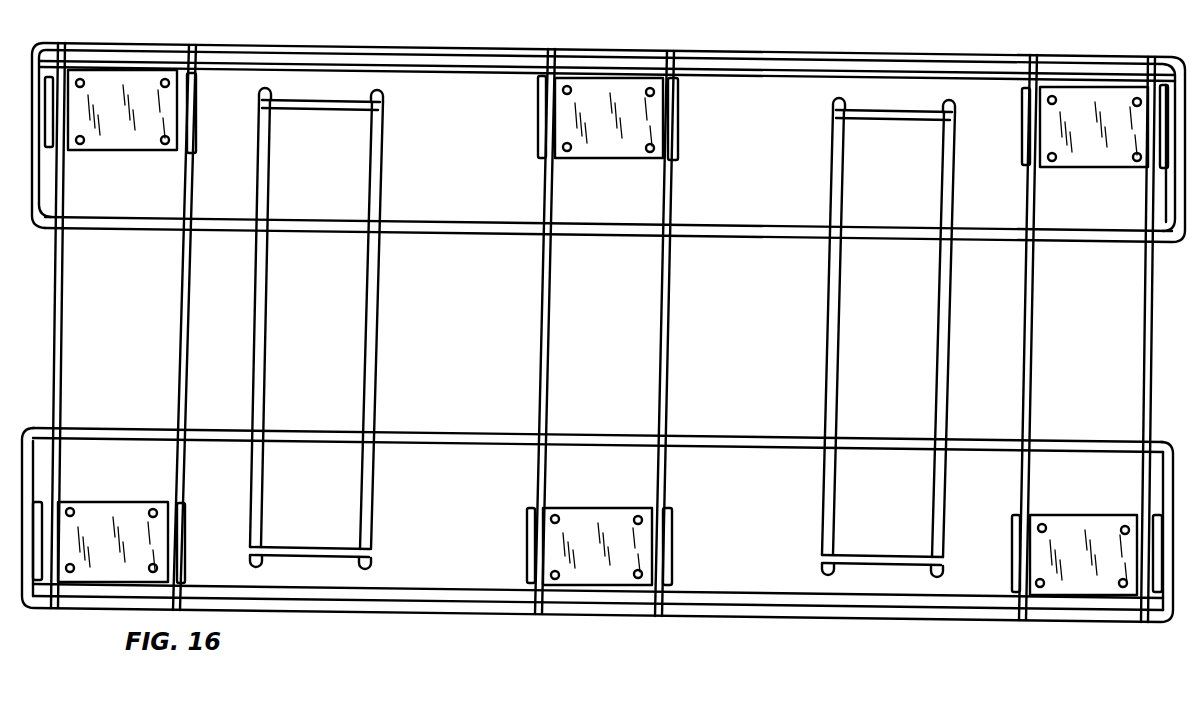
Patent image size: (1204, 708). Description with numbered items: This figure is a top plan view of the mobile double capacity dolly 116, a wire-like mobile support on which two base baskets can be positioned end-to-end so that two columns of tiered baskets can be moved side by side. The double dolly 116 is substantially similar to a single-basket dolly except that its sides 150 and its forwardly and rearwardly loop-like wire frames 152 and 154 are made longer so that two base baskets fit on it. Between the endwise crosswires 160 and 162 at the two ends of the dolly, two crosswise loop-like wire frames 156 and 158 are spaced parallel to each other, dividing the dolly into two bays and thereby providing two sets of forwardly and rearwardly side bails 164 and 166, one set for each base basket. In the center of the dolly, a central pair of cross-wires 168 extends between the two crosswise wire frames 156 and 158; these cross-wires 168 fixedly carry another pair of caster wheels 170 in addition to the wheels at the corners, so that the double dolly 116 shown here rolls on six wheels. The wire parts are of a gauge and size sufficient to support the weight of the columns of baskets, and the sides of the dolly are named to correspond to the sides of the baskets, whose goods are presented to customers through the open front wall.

The double capacity dolly 116 is at (433, 244).
The sides 150 is at (462, 592).
The forward loop-like wire frame 152 is at (476, 445).
The rearward loop-like wire frame 154 is at (757, 224).
The crosswise loop-like wire frame 156 is at (270, 303).
The crosswise loop-like wire frame 158 is at (888, 300).
The endwise crosswire 160 is at (63, 301).
The endwise crosswire 162 is at (1147, 307).
The forward side bail 164 is at (902, 527).
The rearward side bail 166 is at (872, 110).
The central pair of cross-wires 168 is at (556, 308).
The caster wheels 170 is at (597, 508).